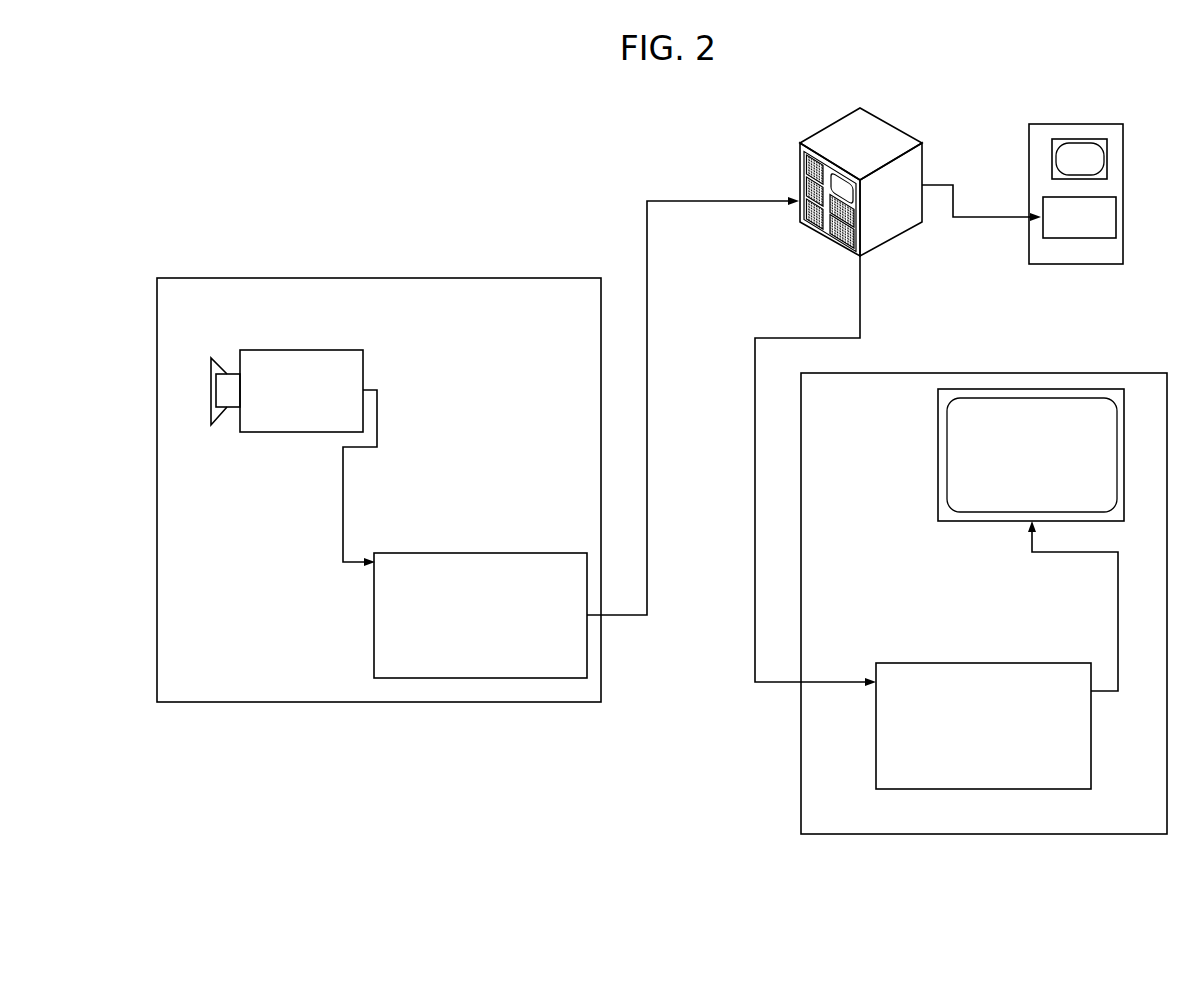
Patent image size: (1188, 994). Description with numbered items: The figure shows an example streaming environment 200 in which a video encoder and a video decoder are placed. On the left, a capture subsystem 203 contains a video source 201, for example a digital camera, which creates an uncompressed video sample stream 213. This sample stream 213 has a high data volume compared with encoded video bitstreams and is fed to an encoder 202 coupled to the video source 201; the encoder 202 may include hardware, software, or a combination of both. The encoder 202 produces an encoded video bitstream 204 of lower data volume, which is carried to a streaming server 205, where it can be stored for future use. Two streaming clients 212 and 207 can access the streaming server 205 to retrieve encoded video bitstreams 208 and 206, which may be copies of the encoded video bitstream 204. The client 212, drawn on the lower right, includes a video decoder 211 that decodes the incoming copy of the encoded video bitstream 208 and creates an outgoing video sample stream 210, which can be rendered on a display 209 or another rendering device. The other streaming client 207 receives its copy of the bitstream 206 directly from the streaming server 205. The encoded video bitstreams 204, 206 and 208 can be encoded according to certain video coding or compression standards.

The streaming environment 200 is at (193, 146).
The video source 201 is at (298, 347).
The encoder 202 is at (492, 552).
The capture subsystem 203 is at (367, 702).
The encoded video bitstream 204 is at (645, 230).
The streaming server 205 is at (800, 167).
The encoded video bitstream 206 is at (987, 217).
The streaming client 207 is at (1124, 153).
The encoded video bitstream 208 is at (753, 521).
The display 209 is at (937, 443).
The outgoing video sample stream 210 is at (1117, 621).
The video decoder 211 is at (875, 755).
The streaming client 212 is at (798, 768).
The uncompressed video sample stream 213 is at (342, 517).